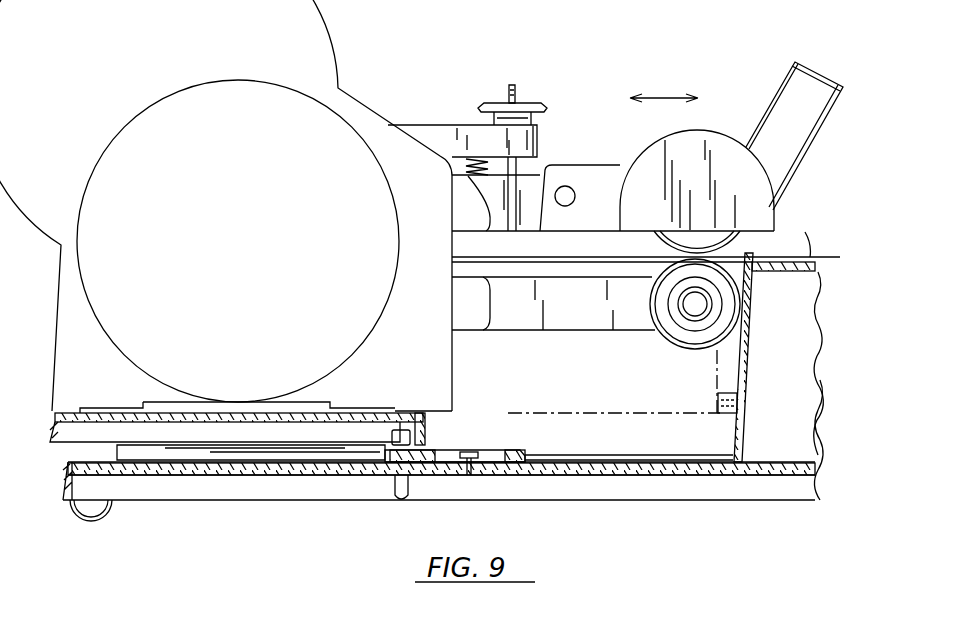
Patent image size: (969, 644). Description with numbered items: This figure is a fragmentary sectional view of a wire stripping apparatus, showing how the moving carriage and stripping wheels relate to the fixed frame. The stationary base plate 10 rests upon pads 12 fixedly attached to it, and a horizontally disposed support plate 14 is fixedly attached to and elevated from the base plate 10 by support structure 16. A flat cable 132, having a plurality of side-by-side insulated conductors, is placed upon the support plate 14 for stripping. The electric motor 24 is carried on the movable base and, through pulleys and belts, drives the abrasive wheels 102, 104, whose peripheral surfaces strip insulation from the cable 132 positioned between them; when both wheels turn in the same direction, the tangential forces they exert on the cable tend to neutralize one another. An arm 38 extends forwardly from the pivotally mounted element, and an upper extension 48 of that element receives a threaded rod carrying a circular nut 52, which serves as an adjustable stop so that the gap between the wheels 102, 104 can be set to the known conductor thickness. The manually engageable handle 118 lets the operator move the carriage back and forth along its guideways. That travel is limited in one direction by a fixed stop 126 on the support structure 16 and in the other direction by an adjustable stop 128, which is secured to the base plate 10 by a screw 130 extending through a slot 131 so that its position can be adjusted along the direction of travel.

The base plate 10 is at (250, 500).
The pads 12 is at (100, 515).
The support plate 14 is at (800, 272).
The support structure 16 is at (748, 350).
The electric motor 24 is at (164, 109).
The arm 38 is at (572, 325).
The upper extension 48 is at (430, 128).
The circular nut 52 is at (528, 102).
The abrasive wheel 102 is at (680, 345).
The abrasive wheel 104 is at (655, 245).
The handle 118 is at (797, 93).
The fixed stop 126 is at (718, 413).
The adjustable stop 128 is at (405, 411).
The screw 130 is at (470, 448).
The slot 131 is at (490, 462).
The cable 132 is at (789, 257).